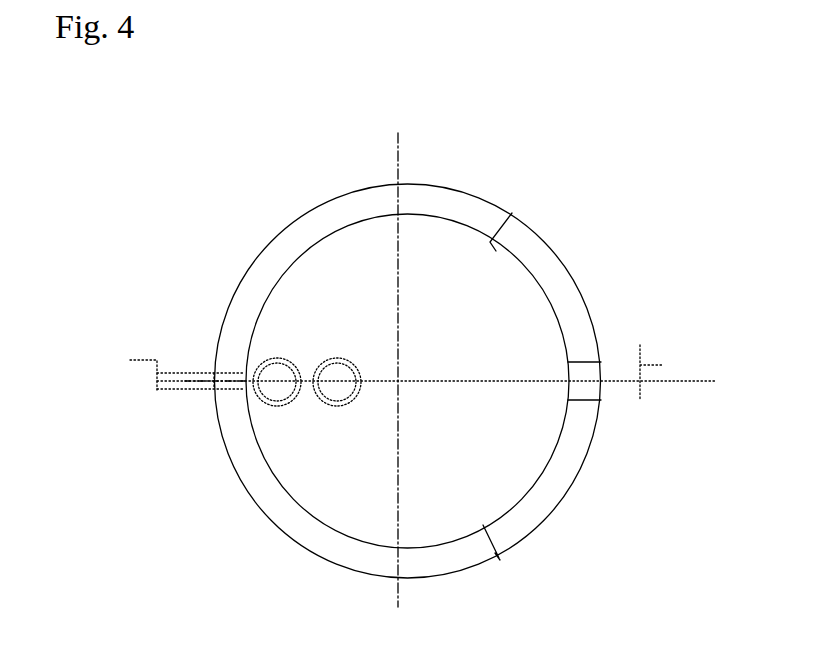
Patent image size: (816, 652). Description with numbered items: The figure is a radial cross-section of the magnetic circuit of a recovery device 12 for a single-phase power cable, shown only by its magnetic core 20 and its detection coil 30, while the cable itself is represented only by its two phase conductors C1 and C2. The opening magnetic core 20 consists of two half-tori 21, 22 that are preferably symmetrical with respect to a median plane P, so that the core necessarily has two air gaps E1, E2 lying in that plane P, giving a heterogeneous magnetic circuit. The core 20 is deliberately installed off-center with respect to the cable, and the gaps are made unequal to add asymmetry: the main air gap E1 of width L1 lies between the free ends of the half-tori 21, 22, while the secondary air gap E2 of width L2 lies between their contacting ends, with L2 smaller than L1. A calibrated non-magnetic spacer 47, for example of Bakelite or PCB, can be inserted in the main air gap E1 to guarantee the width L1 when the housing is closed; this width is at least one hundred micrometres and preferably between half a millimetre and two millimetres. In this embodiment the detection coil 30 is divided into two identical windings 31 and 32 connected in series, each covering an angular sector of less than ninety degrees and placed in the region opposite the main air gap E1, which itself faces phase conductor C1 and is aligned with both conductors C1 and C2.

The recovery device 12 is at (505, 168).
The magnetic core 20 is at (305, 558).
The half-torus 21 is at (290, 238).
The half-torus 22 is at (265, 498).
The non-magnetic spacer 47 is at (217, 407).
The detection coil 30 is at (568, 520).
The winding 31 is at (538, 265).
The winding 32 is at (568, 468).
The main air gap E1 is at (220, 342).
The secondary air gap E2 is at (583, 362).
The width of main air gap L1 is at (143, 363).
The width of secondary air gap L2 is at (651, 372).
The phase conductor C1 is at (275, 407).
The phase conductor C2 is at (368, 398).
The median plane P is at (444, 384).